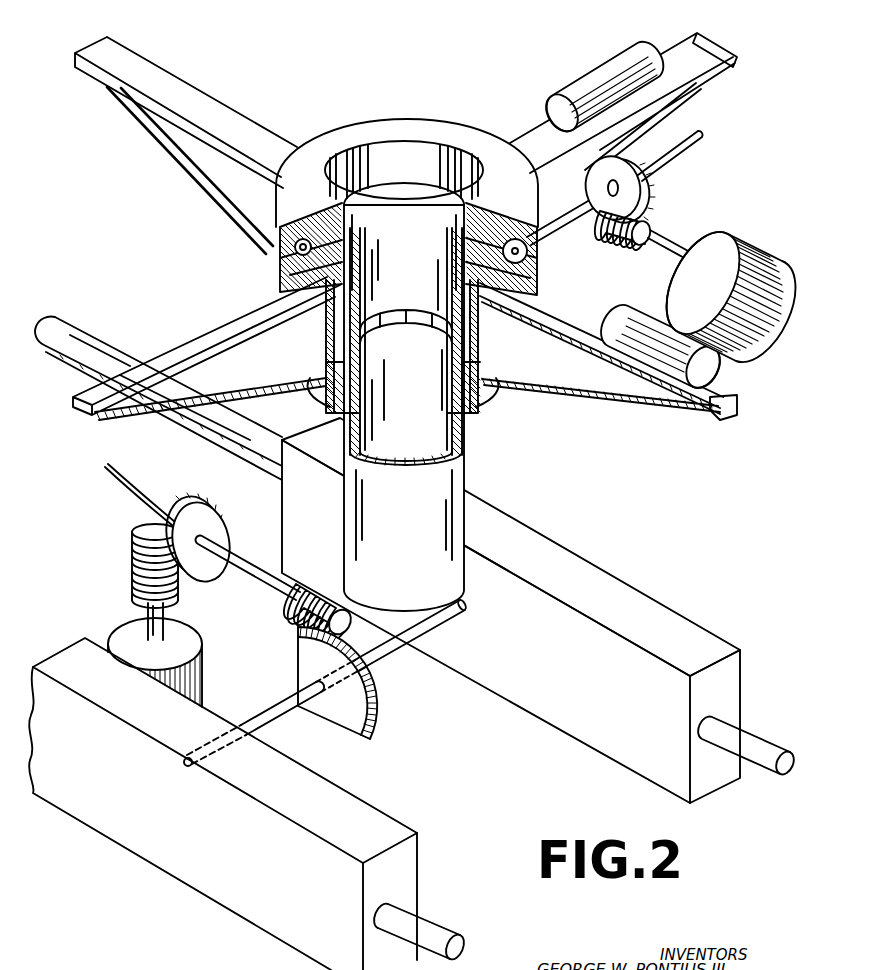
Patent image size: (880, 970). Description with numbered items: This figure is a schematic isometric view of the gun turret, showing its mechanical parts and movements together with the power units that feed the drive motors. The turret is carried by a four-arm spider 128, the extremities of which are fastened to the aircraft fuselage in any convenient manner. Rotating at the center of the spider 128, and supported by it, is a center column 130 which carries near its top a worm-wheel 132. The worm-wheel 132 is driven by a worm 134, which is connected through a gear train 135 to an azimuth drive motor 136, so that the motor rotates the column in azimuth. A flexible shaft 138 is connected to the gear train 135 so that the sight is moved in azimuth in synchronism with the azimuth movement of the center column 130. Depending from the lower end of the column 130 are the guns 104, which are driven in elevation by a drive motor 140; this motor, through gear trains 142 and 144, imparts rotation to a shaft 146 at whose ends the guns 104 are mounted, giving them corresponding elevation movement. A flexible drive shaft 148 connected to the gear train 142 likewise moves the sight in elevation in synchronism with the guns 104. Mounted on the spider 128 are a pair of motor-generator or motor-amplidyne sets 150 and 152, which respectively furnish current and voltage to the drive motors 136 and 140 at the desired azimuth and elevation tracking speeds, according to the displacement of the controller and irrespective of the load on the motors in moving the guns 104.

The guns 104 is at (647, 603).
The four-arm spider 128 is at (200, 97).
The center column 130 is at (447, 477).
The worm-wheel 132 is at (293, 243).
The worm 134 is at (527, 252).
The gear train 135 is at (650, 212).
The azimuth drive motor 136 is at (745, 252).
The flexible shaft 138 is at (699, 136).
The drive motor 140 is at (190, 684).
The gear train 142 is at (130, 561).
The gear train 144 is at (377, 690).
The shaft 146 is at (278, 722).
The flexible drive shaft 148 is at (120, 492).
The motor-generator set 150 is at (703, 371).
The motor-generator set 152 is at (633, 63).